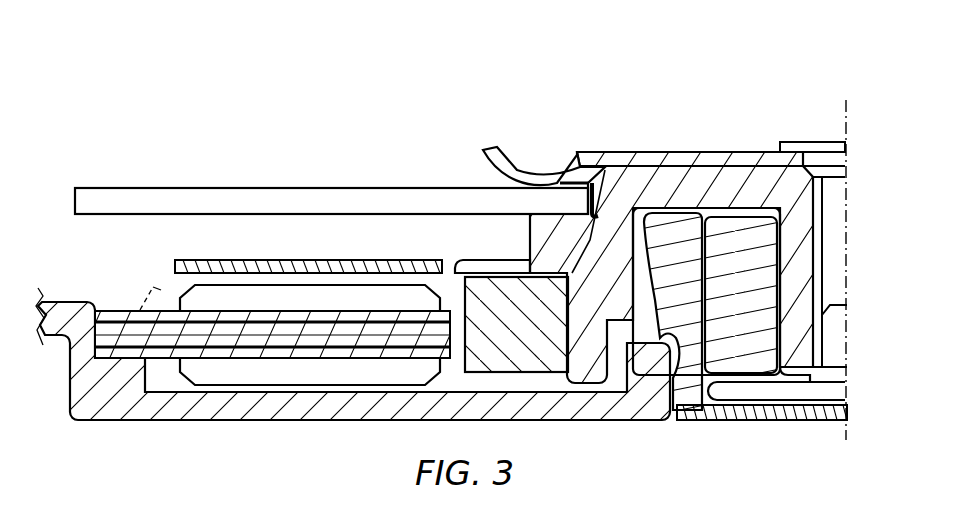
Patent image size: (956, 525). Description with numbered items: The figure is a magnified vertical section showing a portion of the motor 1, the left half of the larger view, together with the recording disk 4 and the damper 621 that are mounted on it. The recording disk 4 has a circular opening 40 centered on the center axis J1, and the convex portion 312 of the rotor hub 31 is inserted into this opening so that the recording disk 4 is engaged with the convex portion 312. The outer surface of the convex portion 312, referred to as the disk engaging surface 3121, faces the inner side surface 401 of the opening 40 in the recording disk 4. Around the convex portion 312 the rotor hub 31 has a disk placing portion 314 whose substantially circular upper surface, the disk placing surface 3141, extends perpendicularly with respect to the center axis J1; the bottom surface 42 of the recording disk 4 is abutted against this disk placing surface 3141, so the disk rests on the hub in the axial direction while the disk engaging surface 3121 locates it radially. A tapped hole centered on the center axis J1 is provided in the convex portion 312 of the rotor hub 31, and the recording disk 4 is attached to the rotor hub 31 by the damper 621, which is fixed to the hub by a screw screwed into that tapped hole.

The motor 1 is at (102, 146).
The recording disk 4 is at (283, 200).
The bottom surface 42 is at (385, 221).
The circular opening 40 is at (533, 247).
The inner side surface 401 is at (598, 225).
The rotor hub 31 is at (723, 99).
The convex portion 312 is at (705, 180).
The disk placing portion 314 is at (540, 203).
The disk placing surface 3141 is at (578, 199).
The disk engaging surface 3121 is at (553, 188).
The damper 621 is at (773, 205).
The center axis J1 is at (847, 120).